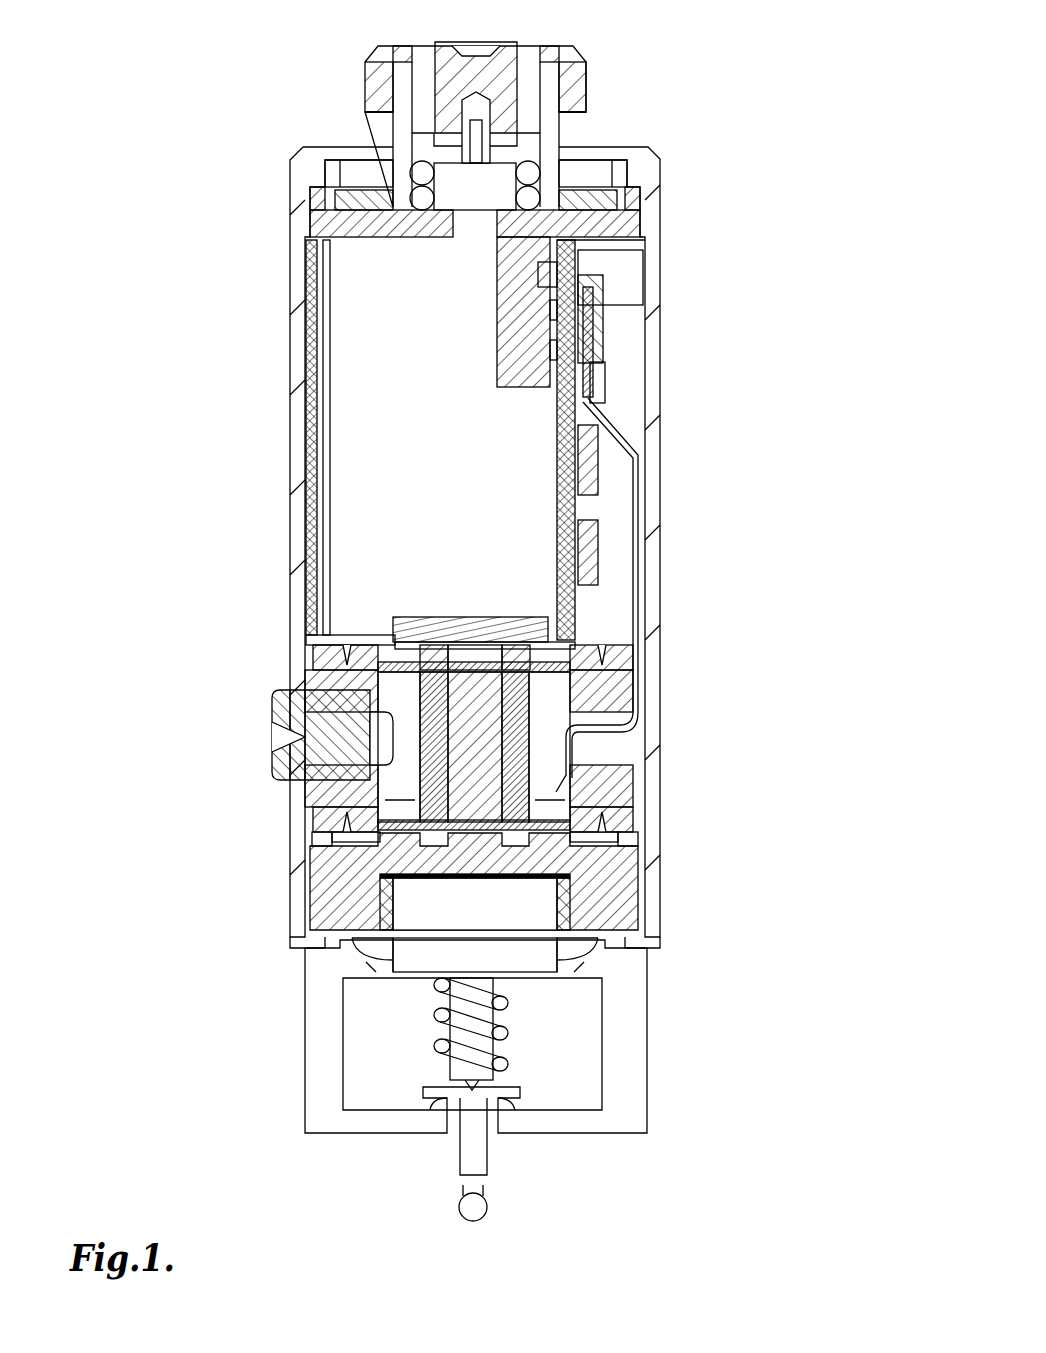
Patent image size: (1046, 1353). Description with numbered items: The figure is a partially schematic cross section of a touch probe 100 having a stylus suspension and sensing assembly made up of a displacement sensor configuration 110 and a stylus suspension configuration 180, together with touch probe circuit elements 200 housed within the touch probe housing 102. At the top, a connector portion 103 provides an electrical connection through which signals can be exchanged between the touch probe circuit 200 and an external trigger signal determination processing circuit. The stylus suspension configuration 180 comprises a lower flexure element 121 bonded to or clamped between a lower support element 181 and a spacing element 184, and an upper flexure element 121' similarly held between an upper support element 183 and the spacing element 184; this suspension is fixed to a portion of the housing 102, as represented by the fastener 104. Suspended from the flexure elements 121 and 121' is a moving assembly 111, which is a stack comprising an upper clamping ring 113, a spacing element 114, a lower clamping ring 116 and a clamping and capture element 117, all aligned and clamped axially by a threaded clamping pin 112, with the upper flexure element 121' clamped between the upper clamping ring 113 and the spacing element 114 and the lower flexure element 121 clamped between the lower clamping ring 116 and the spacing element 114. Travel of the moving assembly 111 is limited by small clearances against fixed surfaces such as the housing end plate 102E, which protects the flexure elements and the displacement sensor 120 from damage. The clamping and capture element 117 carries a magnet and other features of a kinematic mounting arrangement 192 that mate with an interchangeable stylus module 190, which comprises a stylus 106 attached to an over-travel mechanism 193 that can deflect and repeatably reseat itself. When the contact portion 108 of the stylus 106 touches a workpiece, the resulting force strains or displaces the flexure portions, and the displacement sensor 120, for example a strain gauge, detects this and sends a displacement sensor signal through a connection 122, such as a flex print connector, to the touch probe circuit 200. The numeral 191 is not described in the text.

The touch probe 100 is at (235, 62).
The touch probe housing 102 is at (272, 212).
The housing end plate 102E is at (300, 945).
The connector portion 103 is at (607, 92).
The representative fastener 104 is at (272, 718).
The stylus 106 is at (462, 1170).
The contact portion 108 is at (466, 1212).
The displacement sensor configuration 110 is at (632, 747).
The moving assembly 111 is at (359, 453).
The threaded clamping pin 112 is at (320, 905).
The upper clamping ring 113 is at (440, 655).
The spacing element 114 is at (417, 667).
The lower clamping ring 116 is at (310, 880).
The clamping and capture element 117 is at (320, 925).
The displacement sensor 120 is at (570, 765).
The lower flexure element 121 is at (509, 812).
The upper flexure element 121' is at (415, 678).
The connection 122 is at (652, 562).
The stylus suspension configuration 180 is at (477, 749).
The lower support element 181 is at (421, 830).
The upper support element 183 is at (318, 660).
The spacing element 184 is at (315, 785).
The interchangeable stylus module 190 is at (557, 1080).
The housing wall 191 is at (628, 1135).
The kinematic mounting arrangement 192 is at (605, 952).
The over-travel mechanism 193 is at (575, 1027).
The touch probe circuit 200 is at (617, 283).